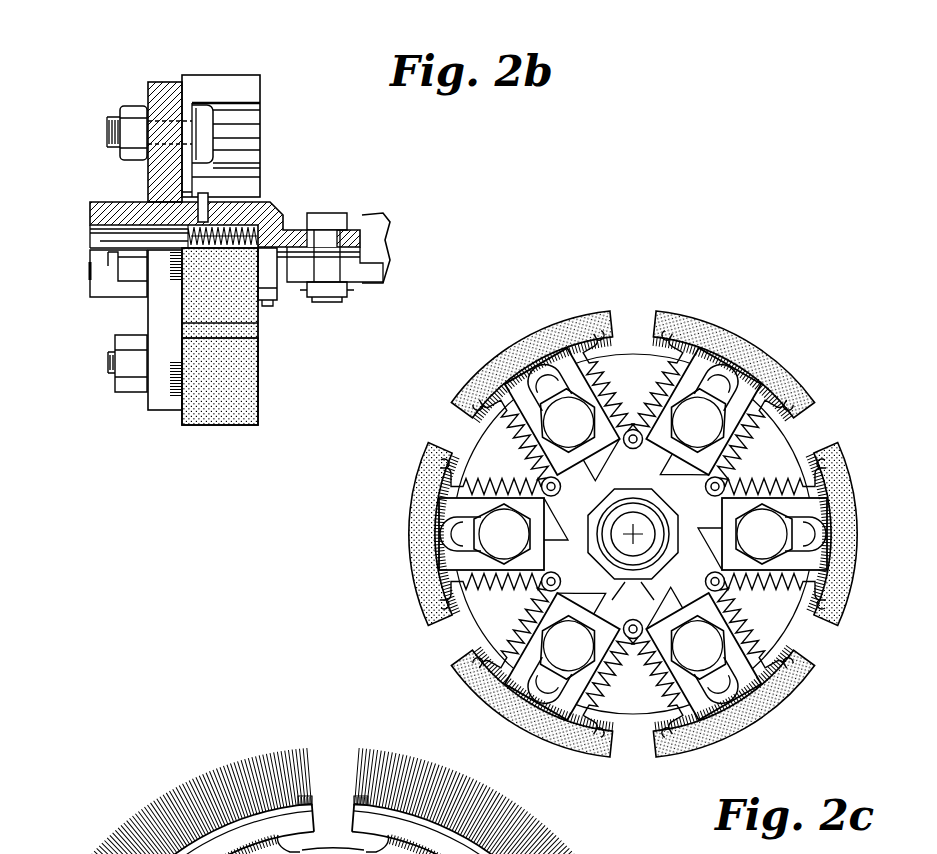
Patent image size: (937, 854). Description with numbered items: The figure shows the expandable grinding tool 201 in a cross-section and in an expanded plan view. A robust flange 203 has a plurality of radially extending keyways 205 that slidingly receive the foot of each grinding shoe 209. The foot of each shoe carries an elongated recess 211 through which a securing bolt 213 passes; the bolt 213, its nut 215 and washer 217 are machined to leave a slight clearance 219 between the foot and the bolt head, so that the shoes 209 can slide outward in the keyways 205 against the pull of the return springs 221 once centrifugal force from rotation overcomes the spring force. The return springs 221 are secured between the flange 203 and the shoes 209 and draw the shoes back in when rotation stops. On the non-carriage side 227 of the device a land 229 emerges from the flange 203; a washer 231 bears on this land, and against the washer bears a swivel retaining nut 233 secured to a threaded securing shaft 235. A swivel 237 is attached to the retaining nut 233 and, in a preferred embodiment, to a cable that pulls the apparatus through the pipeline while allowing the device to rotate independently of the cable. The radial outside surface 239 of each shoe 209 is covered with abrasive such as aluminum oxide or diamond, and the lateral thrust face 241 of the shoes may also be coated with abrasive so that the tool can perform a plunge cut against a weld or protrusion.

In FIG. 2B, the grinding tool 201 is at (220, 256).
In FIG. 2B, the flange 203 is at (158, 82).
In FIG. 2C, the flange 203 is at (473, 446).
In FIG. 2B, the keyways 205 is at (181, 78).
In FIG. 2C, the grinding shoe 209 is at (586, 534).
In FIG. 2B, the elongated recess 211 is at (247, 112).
In FIG. 2B, the securing bolt 213 is at (213, 132).
In FIG. 2B, the nut 215 is at (100, 118).
In FIG. 2B, the washer 217 is at (147, 160).
In FIG. 2B, the clearance 219 is at (194, 100).
In FIG. 2C, the return springs 221 is at (478, 628).
In FIG. 2B, the non-carriage side 227 is at (267, 365).
In FIG. 2B, the land 229 is at (195, 203).
In FIG. 2B, the washer 231 is at (262, 300).
In FIG. 2B, the swivel retaining nut 233 is at (277, 223).
In FIG. 2B, the threaded securing shaft 235 is at (260, 248).
In FIG. 2B, the swivel 237 is at (378, 222).
In FIG. 2B, the radial outside surface 239 is at (228, 407).
In FIG. 2C, the lateral face 241 is at (522, 718).